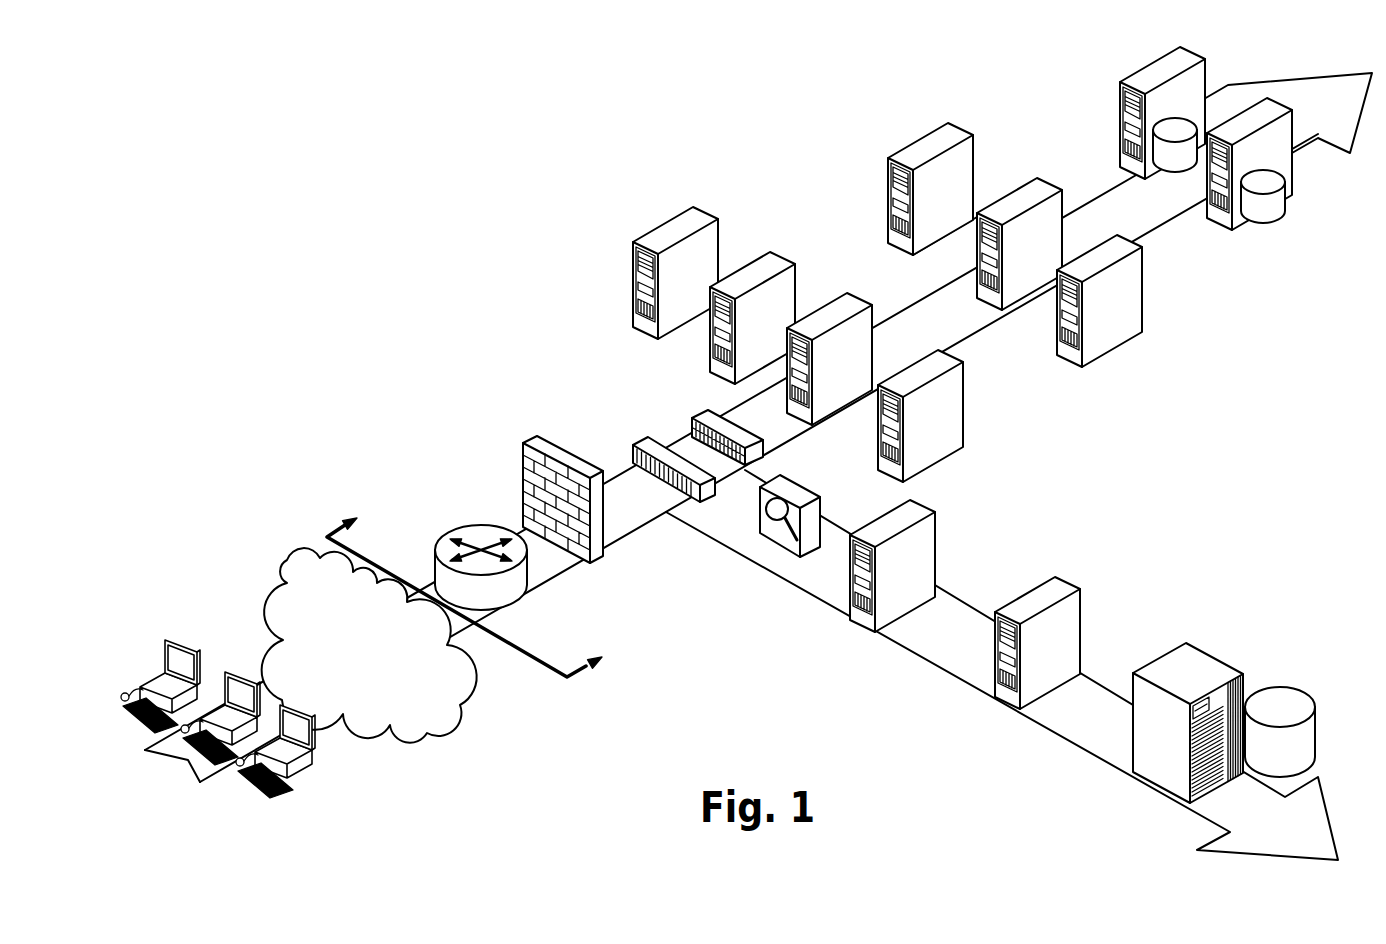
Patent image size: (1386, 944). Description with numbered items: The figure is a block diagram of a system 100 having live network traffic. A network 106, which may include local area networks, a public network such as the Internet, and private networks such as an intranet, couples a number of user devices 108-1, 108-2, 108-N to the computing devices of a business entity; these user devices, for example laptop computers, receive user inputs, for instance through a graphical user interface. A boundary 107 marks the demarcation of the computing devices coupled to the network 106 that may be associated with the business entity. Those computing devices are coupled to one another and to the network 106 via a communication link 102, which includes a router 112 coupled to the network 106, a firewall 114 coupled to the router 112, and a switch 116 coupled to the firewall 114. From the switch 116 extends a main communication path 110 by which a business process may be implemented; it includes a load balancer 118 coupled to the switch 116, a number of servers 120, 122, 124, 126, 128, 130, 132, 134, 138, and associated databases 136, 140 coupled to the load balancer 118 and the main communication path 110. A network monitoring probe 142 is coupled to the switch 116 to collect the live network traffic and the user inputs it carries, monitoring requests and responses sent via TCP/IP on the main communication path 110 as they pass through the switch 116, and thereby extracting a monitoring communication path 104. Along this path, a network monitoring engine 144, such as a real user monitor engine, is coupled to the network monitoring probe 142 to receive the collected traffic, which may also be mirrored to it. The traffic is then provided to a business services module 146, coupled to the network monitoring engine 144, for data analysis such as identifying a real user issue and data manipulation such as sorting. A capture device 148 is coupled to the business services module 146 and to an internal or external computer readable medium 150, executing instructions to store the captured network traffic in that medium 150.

The system 100 is at (315, 210).
The communication link 102 is at (543, 586).
The monitoring communication path 104 is at (964, 676).
The network 106 is at (271, 576).
The boundary 107 is at (541, 664).
The user device 108-1 is at (192, 633).
The user device 108-2 is at (250, 665).
The user device 108-N is at (300, 710).
The main communication path 110 is at (1330, 80).
The router 112 is at (483, 522).
The firewall 114 is at (521, 468).
The switch 116 is at (656, 433).
The load balancer 118 is at (760, 456).
The server 120 is at (704, 207).
The server 122 is at (780, 253).
The server 124 is at (857, 294).
The server 126 is at (962, 401).
The server 128 is at (952, 134).
The server 130 is at (1042, 184).
The server 132 is at (1142, 272).
The server 134 is at (1148, 68).
The database 136 is at (1196, 124).
The server 138 is at (1292, 168).
The database 140 is at (1285, 201).
The network monitoring probe 142 is at (800, 488).
The network monitoring engine 144 is at (936, 540).
The business services module 146 is at (1068, 590).
The capture device 148 is at (1212, 650).
The computer readable medium 150 is at (1302, 688).